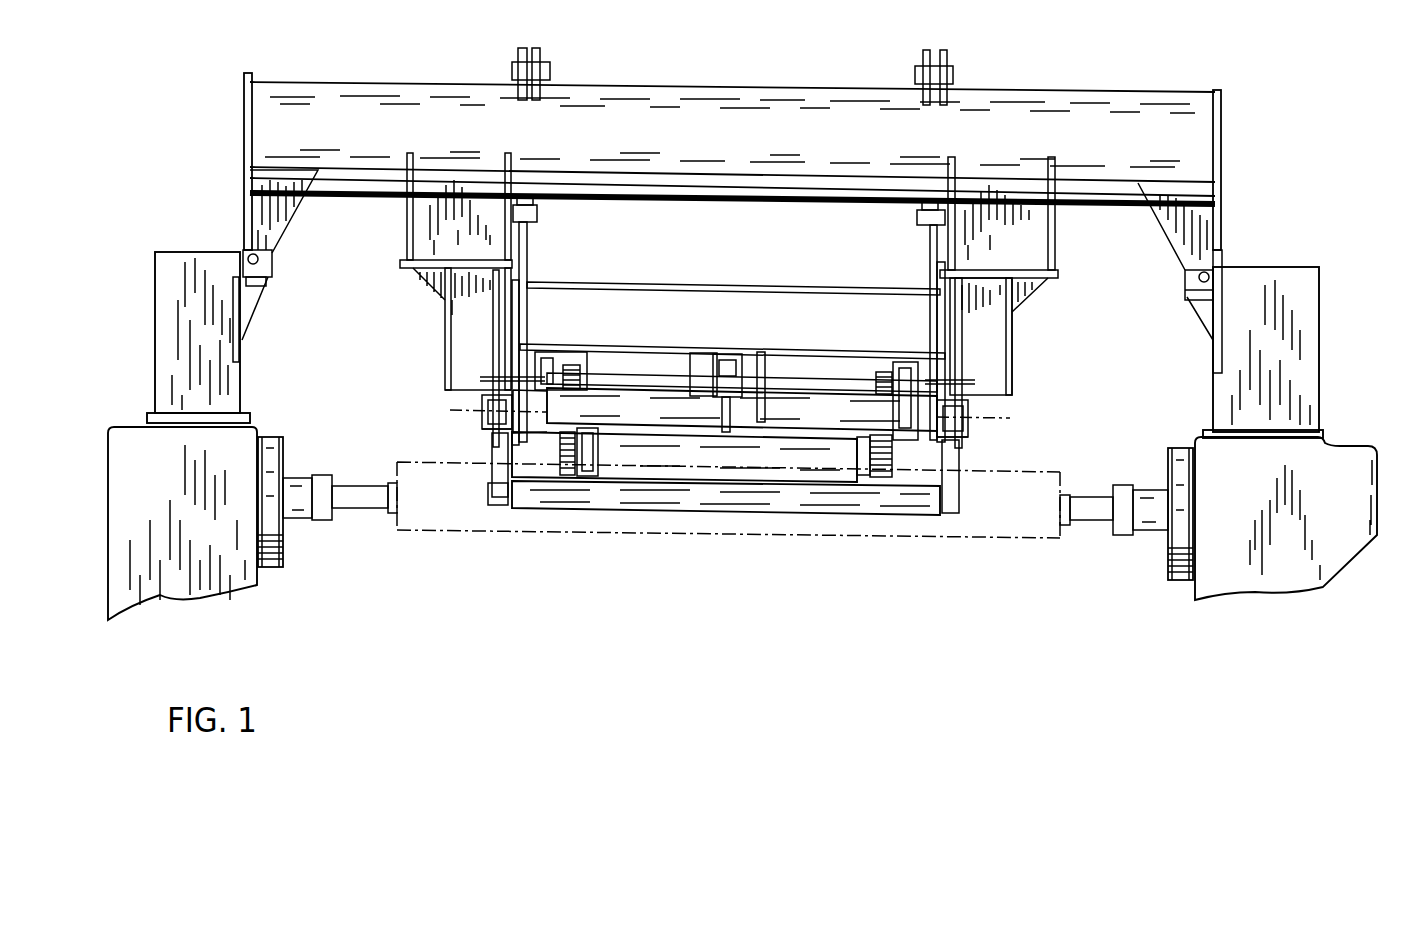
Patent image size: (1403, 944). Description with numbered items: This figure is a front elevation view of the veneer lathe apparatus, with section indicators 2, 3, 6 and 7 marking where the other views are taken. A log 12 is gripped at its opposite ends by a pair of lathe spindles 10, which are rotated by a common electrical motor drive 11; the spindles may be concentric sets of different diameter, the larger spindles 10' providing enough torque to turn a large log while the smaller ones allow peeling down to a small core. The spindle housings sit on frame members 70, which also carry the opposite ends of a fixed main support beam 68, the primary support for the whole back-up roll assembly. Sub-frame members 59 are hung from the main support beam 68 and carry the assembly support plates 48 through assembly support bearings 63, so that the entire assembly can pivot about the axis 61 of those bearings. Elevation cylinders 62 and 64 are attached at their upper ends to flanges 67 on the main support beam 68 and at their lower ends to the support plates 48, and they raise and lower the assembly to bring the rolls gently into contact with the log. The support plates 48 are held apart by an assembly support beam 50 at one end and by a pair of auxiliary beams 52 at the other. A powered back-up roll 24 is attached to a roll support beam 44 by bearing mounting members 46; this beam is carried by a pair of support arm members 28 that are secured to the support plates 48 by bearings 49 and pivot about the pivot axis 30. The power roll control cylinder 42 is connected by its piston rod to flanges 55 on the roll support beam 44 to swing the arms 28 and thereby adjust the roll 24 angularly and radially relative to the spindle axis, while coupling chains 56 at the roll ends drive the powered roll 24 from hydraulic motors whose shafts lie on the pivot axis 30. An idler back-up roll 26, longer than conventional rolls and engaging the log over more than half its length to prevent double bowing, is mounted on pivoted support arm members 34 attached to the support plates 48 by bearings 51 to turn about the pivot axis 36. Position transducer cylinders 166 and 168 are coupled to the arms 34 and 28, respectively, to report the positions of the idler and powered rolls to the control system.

The section line 2- 2 is at (212, 88).
The section line 3- 3 is at (390, 57).
The section line 6- 6 is at (685, 61).
The section line 7- 7 is at (585, 327).
The lathe spindles 10 is at (722, 503).
The larger spindles 10' is at (725, 478).
The electrical motor drive 11 is at (272, 438).
The log 12 is at (905, 540).
The powered back-up roll 24 is at (693, 482).
The idler back-up roll 26 is at (755, 486).
The support arm members 28 is at (905, 362).
The pivot axis 30 is at (810, 385).
The support arm members 34 is at (496, 470).
The pivot axis 36 is at (483, 418).
The power roll control cylinder 42 is at (738, 354).
The roll support beam 44 is at (665, 398).
The mounting members 46 is at (578, 458).
The assembly support plates 48 is at (527, 292).
The bearings 49 is at (578, 362).
The assembly support beam 50 is at (700, 283).
The bearings 51 is at (492, 440).
The auxiliary beams 52 is at (498, 490).
The flanges 55 is at (722, 411).
The coupling chains 56 is at (567, 464).
The sub-frame 59 is at (447, 334).
The axis 61 is at (495, 365).
The elevation cylinder 62 is at (540, 212).
The assembly support bearings 63 is at (492, 379).
The elevation cylinder 64 is at (915, 220).
The flanges 67 is at (537, 48).
The main support beam 68 is at (784, 92).
The frame members 70 is at (155, 325).
The position transducer cylinder 166 is at (712, 353).
The position transducer cylinder 168 is at (762, 353).